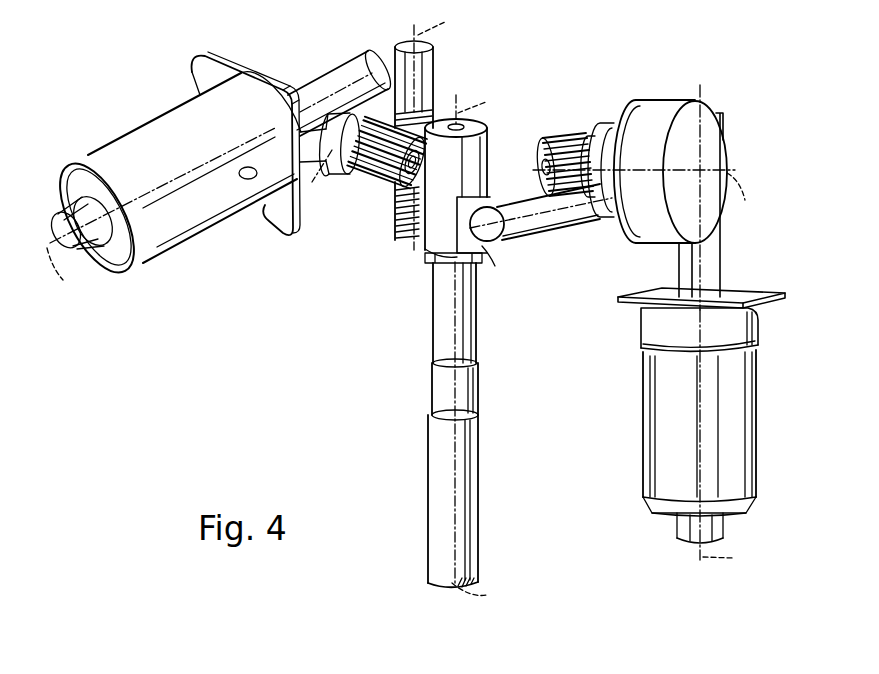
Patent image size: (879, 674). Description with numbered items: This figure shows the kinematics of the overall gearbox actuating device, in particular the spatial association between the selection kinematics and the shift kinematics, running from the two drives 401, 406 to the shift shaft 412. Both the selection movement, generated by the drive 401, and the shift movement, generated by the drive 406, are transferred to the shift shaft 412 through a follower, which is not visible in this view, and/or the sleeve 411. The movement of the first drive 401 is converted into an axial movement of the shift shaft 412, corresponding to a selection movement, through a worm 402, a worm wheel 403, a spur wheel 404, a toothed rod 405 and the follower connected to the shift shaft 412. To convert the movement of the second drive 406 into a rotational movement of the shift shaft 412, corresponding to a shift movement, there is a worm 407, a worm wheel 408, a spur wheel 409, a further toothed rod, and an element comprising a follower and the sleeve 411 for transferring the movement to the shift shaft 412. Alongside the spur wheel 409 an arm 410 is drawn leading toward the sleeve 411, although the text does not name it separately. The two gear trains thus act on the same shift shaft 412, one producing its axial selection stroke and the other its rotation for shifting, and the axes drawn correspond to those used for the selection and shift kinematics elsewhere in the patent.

The drive 401 is at (183, 227).
The worm 402 is at (327, 78).
The worm wheel 403 is at (338, 150).
The spur wheel 404 is at (378, 167).
The toothed rod 405 is at (428, 80).
The drive 406 is at (737, 433).
The worm 407 is at (713, 256).
The worm wheel 408 is at (650, 108).
The spur wheel 409 is at (562, 140).
The connecting arm 410 is at (532, 232).
The sleeve 411 is at (480, 142).
The shift shaft 412 is at (463, 444).